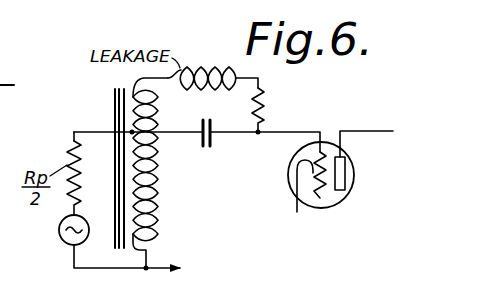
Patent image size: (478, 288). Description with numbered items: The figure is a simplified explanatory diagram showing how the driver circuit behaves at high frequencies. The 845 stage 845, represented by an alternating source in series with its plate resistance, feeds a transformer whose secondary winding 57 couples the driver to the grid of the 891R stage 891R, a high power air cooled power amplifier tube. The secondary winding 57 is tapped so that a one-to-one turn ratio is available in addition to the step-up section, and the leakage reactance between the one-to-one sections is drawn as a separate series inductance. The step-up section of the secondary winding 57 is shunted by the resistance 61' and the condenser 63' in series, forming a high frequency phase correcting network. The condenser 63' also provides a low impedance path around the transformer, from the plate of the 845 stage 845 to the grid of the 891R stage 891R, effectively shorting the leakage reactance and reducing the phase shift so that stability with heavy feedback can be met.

The secondary winding 57 is at (148, 164).
The resistance 61' is at (274, 110).
The condenser 63' is at (224, 141).
The 891R stage 891R is at (376, 114).
The 845 stage 845 is at (61, 241).